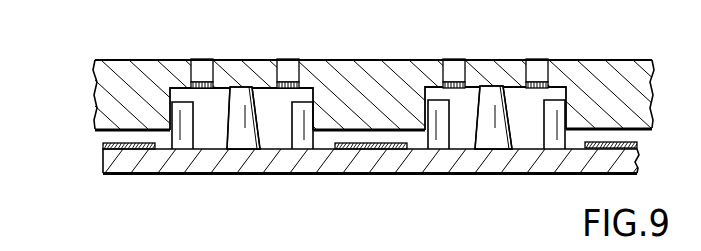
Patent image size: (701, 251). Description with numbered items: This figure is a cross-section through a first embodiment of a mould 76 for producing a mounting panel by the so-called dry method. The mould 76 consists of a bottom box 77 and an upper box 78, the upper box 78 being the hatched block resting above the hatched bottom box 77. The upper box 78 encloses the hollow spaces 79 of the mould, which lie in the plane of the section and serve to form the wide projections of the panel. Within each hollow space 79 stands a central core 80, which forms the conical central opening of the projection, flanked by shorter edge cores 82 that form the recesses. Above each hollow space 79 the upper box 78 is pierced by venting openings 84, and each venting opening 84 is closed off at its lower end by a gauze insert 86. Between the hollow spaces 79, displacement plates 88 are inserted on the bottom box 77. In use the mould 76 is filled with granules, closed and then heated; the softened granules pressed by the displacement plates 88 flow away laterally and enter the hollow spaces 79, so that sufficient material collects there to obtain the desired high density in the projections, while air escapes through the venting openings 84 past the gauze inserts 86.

The mould 76 is at (90, 97).
The bottom box 77 is at (133, 163).
The upper box 78 is at (360, 77).
The hollow space 79 is at (215, 98).
The central core 80 is at (243, 142).
The edge core 82 is at (183, 140).
The venting opening 84 is at (202, 67).
The gauze insert 86 is at (190, 85).
The displacement plate 88 is at (373, 150).